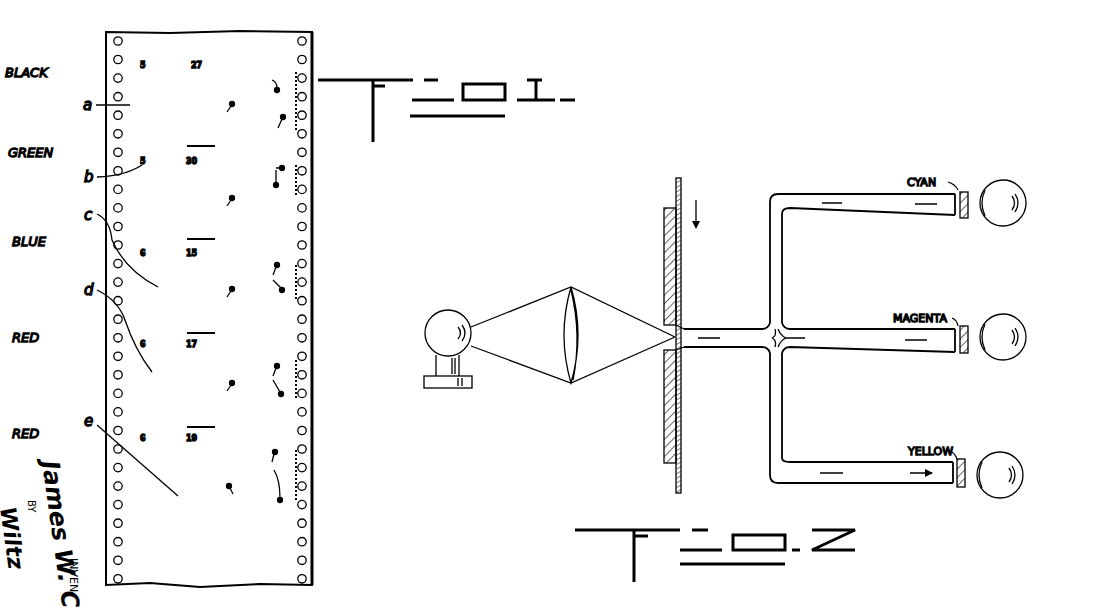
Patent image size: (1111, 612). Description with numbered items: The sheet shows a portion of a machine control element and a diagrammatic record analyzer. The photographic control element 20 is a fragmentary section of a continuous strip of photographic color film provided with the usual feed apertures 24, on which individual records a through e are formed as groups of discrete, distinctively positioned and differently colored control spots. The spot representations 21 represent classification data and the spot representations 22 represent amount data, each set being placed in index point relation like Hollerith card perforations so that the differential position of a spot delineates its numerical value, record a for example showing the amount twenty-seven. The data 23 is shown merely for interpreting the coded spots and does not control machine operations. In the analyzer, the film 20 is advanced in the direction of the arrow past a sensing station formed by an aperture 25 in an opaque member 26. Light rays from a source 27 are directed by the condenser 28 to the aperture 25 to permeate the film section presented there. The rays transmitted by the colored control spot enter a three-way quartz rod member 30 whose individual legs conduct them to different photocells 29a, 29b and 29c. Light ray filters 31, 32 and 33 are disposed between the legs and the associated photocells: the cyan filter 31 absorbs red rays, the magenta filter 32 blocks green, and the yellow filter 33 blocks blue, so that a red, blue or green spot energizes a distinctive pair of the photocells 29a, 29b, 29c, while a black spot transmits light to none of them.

In FIG. 1, the photographic control element 20 is at (307, 236).
In FIG. 2, the photographic control element 20 is at (681, 479).
In FIG. 1, the data designations 21 is at (231, 306).
In FIG. 1, the data designations 22 is at (268, 288).
In FIG. 1, the data 23 is at (188, 64).
In FIG. 1, the feed apertures 24 is at (113, 95).
In FIG. 2, the aperture 25 is at (668, 336).
In FIG. 2, the opaque member 26 is at (664, 249).
In FIG. 2, the source 27 is at (440, 334).
In FIG. 2, the condenser 28 is at (568, 352).
In FIG. 2, the photocell 29a is at (1018, 222).
In FIG. 2, the photocell 29b is at (1018, 356).
In FIG. 2, the photocell 29c is at (1015, 494).
In FIG. 2, the three-way quartz rod member 30 is at (788, 336).
In FIG. 2, the filter 31 is at (963, 219).
In FIG. 2, the filter 32 is at (963, 354).
In FIG. 2, the filter 33 is at (961, 488).